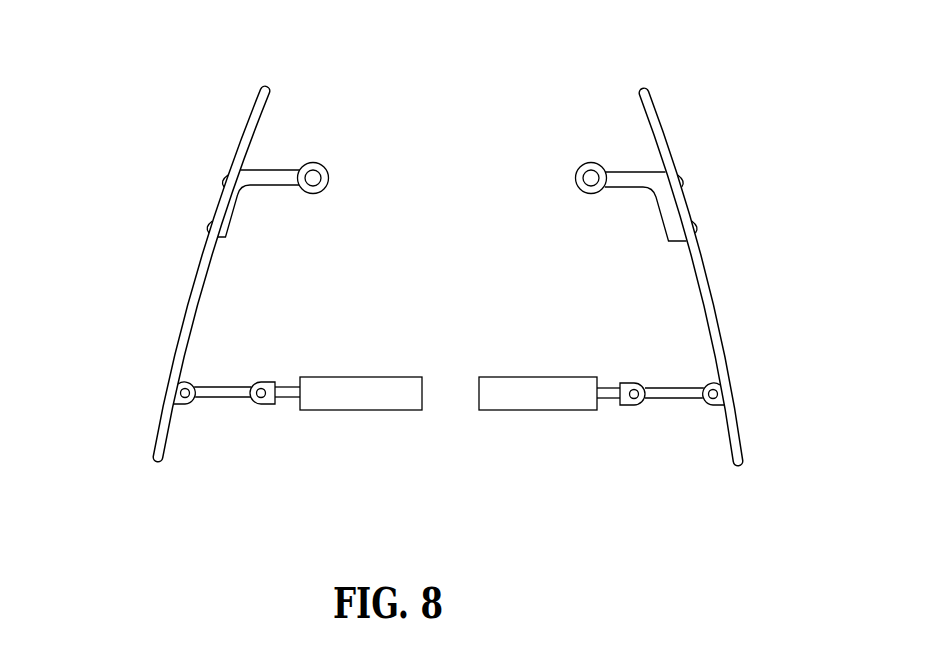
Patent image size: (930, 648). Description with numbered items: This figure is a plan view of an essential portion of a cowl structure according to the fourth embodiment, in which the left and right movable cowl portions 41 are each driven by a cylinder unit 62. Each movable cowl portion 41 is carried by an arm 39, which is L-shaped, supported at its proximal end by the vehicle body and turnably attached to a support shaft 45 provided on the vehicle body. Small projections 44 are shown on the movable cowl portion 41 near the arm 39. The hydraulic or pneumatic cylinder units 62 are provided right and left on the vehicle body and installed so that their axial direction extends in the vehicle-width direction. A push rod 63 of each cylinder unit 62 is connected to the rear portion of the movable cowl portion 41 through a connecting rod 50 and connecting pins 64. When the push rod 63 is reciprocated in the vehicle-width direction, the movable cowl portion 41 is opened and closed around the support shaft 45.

The movable cowl portion 41 is at (190, 292).
The protrusion 44 is at (205, 223).
The arm 39 is at (272, 186).
The support shaft 45 is at (310, 163).
The connecting pin 64 is at (188, 406).
The connecting rod 50 is at (226, 398).
The push rod 63 is at (290, 398).
The cylinder unit 62 is at (362, 421).